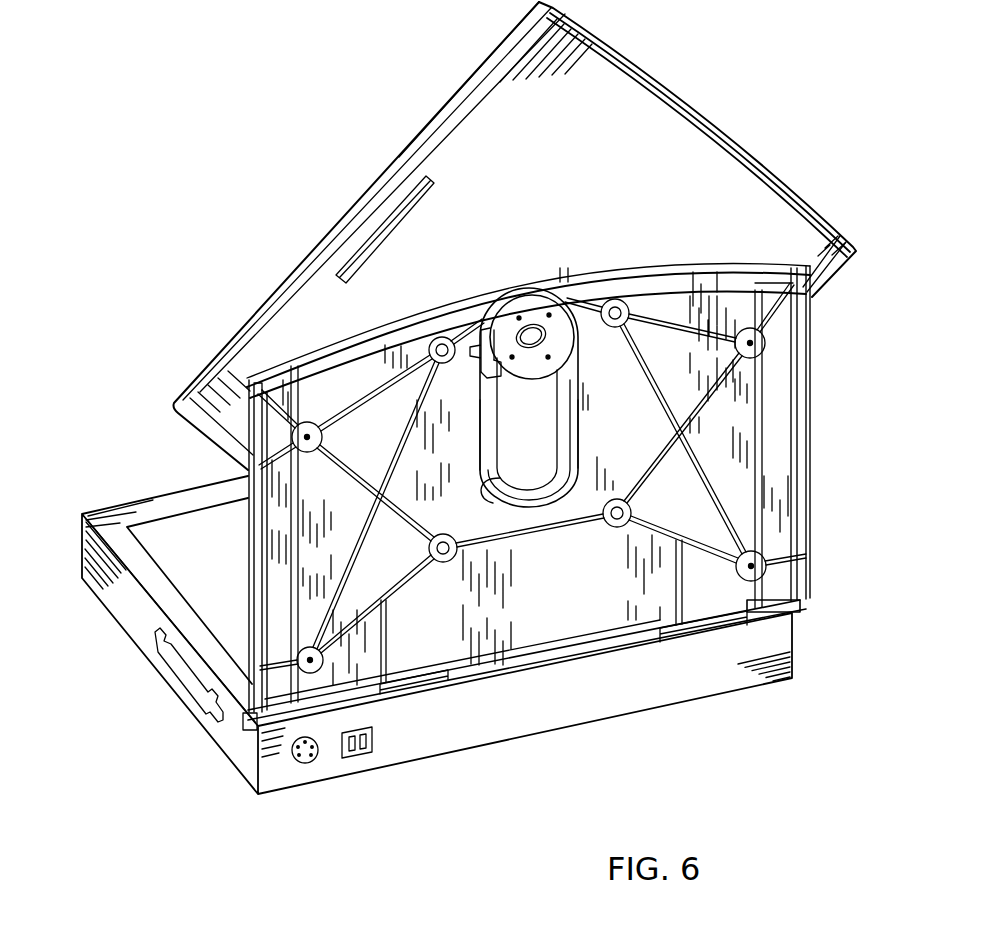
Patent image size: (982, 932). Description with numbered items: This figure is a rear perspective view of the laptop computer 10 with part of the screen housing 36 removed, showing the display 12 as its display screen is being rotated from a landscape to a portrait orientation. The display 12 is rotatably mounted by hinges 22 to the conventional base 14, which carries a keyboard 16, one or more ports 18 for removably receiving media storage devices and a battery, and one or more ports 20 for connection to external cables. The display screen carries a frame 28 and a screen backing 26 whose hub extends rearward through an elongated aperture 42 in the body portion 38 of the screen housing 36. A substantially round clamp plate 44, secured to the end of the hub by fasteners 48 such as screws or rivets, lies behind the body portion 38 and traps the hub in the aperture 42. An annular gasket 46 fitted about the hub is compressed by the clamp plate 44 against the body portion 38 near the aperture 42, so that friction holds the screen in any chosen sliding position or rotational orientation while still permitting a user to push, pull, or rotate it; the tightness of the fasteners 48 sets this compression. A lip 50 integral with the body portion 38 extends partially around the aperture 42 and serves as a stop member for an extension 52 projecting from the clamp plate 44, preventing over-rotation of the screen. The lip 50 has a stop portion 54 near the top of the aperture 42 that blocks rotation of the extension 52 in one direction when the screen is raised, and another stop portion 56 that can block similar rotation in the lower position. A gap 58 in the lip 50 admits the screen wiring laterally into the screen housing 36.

The laptop computer 10 is at (112, 706).
The display 12 is at (837, 351).
The base 14 is at (110, 613).
The keyboard 16 is at (189, 591).
The ports 18 is at (193, 680).
The ports 20 is at (312, 762).
The hinges 22 is at (383, 701).
The screen backing 26 is at (515, 236).
The frame 28 is at (454, 94).
The screen housing 36 is at (811, 464).
The body portion 38 is at (530, 476).
The aperture 42 is at (529, 397).
The clamp plate 44 is at (557, 343).
The gasket 46 is at (527, 379).
The fasteners 48 is at (549, 313).
The lip 50 is at (574, 447).
The extension 52 is at (487, 385).
The stop portion 54 is at (483, 348).
The stop portion 56 is at (481, 496).
The gap 58 is at (480, 444).